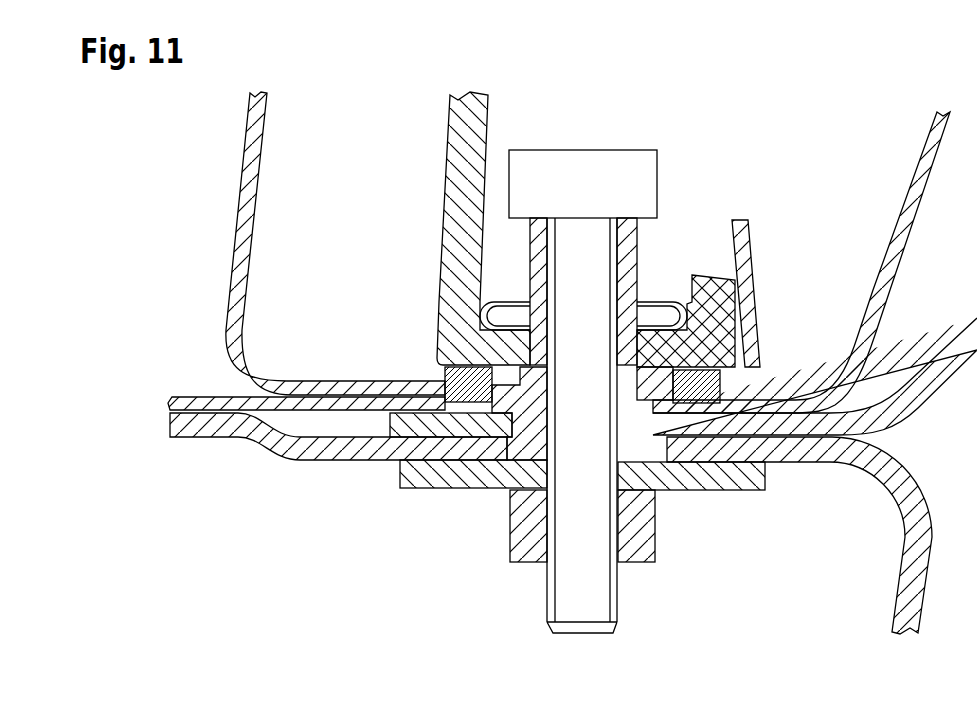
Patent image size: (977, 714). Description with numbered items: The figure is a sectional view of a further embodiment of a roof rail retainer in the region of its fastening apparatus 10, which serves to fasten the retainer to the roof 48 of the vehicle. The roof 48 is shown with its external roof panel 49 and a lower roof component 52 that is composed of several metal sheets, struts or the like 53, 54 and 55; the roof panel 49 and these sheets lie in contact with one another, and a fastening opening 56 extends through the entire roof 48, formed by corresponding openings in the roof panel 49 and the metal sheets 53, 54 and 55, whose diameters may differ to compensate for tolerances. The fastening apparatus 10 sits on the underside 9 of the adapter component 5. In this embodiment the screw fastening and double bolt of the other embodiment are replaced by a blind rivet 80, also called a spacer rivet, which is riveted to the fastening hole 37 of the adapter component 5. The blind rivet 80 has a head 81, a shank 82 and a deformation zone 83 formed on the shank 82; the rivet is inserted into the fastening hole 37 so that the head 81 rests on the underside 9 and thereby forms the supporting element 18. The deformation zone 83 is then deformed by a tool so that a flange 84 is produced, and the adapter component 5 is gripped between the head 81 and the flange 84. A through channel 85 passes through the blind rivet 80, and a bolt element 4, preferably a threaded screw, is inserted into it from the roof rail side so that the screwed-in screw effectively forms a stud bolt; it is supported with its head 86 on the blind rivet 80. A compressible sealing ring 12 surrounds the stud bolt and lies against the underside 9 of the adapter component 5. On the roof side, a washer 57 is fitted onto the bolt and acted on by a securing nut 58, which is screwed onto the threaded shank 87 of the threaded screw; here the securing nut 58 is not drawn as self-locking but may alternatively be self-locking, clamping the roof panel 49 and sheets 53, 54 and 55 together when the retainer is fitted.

The bolt element 4 is at (588, 610).
The adapter component 5 is at (470, 182).
The underside 9 is at (437, 350).
The fastening apparatus 10 is at (407, 320).
The sealing ring 12 is at (700, 383).
The supporting element 18 is at (680, 347).
The fastening hole 37 is at (633, 307).
The roof 48 is at (834, 316).
The roof panel 49 is at (247, 197).
The lower roof component 52 is at (243, 460).
The metal sheet 53 is at (313, 403).
The metal sheet 54 is at (403, 427).
The metal sheet 55 is at (271, 437).
The fastening opening 56 is at (537, 380).
The washer 57 is at (733, 478).
The securing nut 58 is at (655, 530).
The blind rivet 80 is at (651, 250).
The head 81 is at (448, 460).
The shank 82 is at (487, 258).
The deformation zone 83 is at (697, 297).
The flange 84 is at (538, 288).
The through channel 85 is at (613, 265).
The head 86 is at (565, 170).
The threaded shank 87 is at (563, 602).